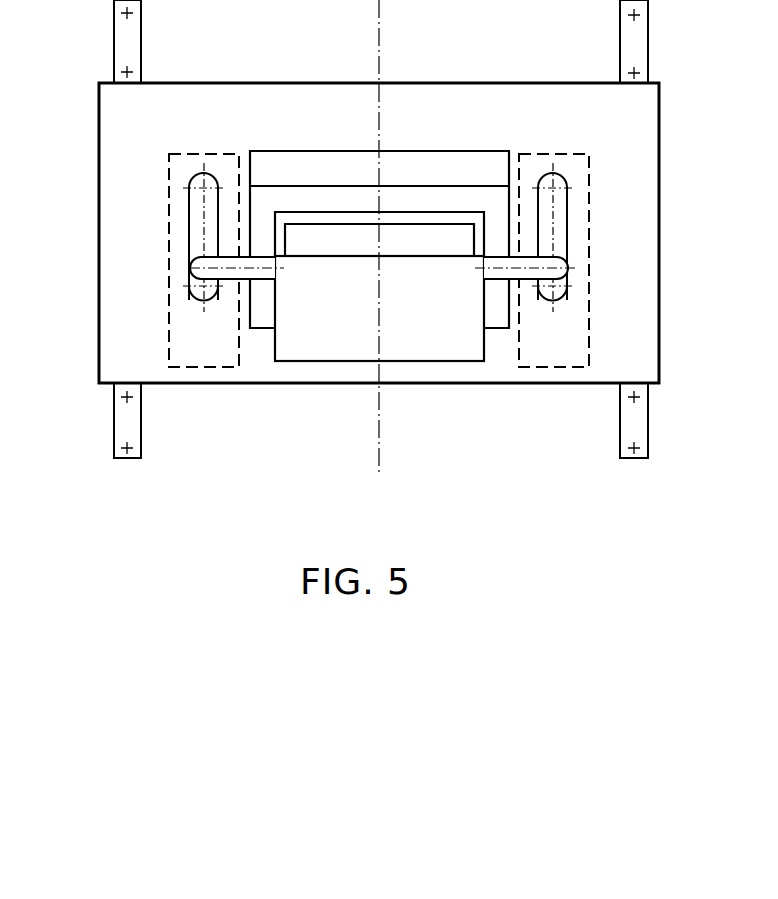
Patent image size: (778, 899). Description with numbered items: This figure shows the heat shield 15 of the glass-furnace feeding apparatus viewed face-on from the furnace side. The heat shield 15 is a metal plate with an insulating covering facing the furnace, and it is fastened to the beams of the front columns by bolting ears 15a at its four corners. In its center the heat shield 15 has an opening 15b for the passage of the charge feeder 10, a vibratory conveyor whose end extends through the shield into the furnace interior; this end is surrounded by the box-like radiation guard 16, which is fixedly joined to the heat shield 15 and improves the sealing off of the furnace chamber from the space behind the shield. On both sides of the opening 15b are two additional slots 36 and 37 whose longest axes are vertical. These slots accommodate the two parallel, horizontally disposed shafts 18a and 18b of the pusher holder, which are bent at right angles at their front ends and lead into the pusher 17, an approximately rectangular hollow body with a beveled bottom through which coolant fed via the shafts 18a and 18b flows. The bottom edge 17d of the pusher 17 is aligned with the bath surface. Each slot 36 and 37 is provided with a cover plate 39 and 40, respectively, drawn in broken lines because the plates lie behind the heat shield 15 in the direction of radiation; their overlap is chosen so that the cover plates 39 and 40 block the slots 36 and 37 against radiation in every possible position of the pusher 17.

The charge feeder 10 is at (428, 220).
The heat shield 15 is at (500, 113).
The bolting ears 15a is at (131, 41).
The opening 15b is at (312, 151).
The radiation guard 16 is at (283, 193).
The pusher 17 is at (334, 328).
The bottom edge 17d is at (438, 362).
The shaft 18a is at (558, 262).
The shaft 18b is at (190, 268).
The slot 36 is at (569, 213).
The slot 37 is at (190, 215).
The cover plate 39 is at (589, 320).
The cover plate 40 is at (169, 338).